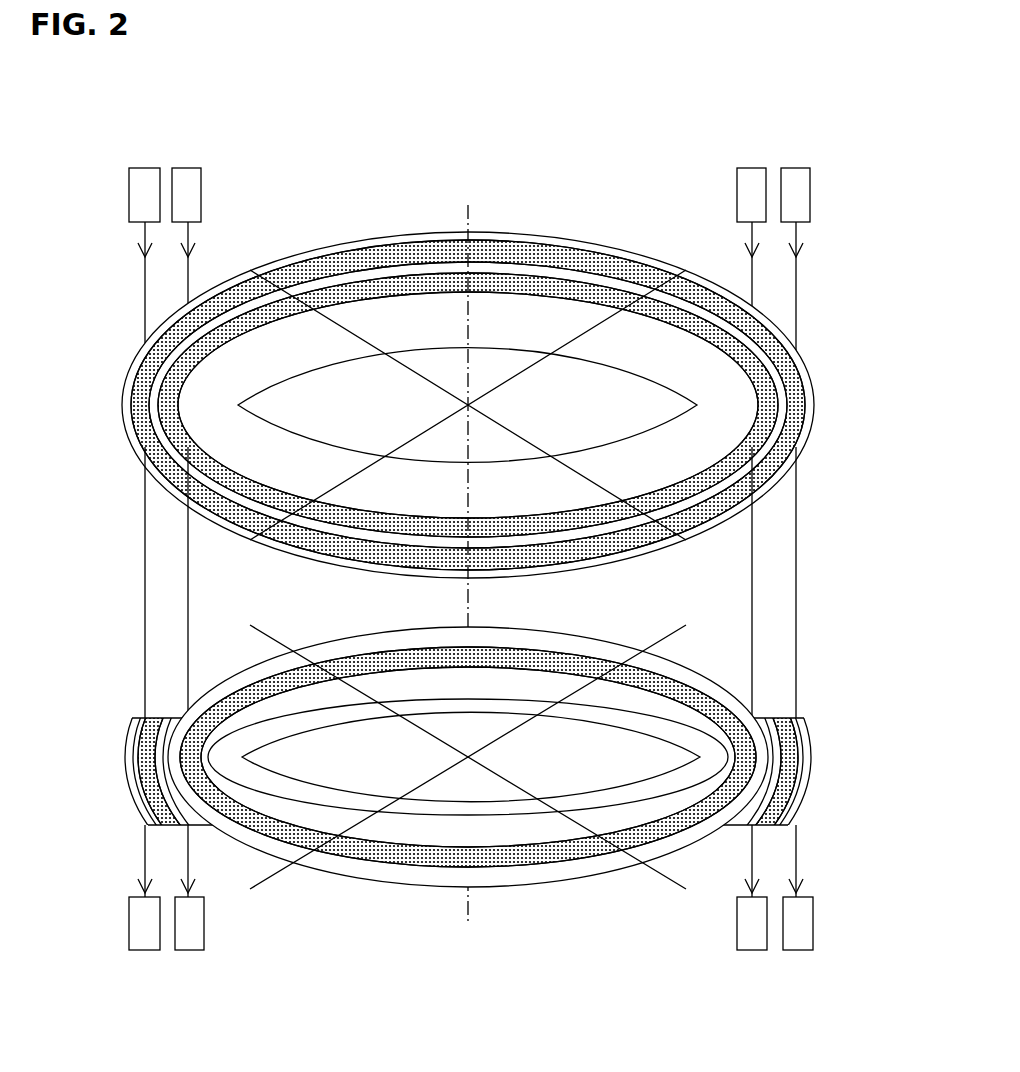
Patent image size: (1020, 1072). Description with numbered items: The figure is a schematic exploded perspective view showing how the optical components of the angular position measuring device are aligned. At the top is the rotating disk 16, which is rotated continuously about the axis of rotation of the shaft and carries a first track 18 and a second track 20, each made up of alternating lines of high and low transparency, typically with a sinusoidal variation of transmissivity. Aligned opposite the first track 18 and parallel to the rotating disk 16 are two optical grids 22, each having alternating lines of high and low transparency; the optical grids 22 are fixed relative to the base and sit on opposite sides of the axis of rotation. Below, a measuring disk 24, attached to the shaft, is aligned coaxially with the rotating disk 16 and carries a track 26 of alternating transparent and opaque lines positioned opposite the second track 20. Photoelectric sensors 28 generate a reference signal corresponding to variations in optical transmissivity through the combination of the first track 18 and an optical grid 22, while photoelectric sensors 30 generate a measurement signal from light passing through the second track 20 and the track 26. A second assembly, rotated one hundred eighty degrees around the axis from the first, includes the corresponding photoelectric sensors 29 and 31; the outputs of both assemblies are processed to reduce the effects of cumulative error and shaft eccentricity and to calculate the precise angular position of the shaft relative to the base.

The rotating disk 16 is at (120, 408).
The first track 18 is at (532, 252).
The second track 20 is at (404, 290).
The optical grids 22 is at (140, 750).
The measuring disk 24 is at (215, 700).
The track 26 is at (447, 850).
The photoelectric sensors 28 is at (137, 170).
The photoelectric sensors 29 is at (806, 168).
The photoelectric sensors 30 is at (193, 168).
The photoelectric sensors 31 is at (742, 168).